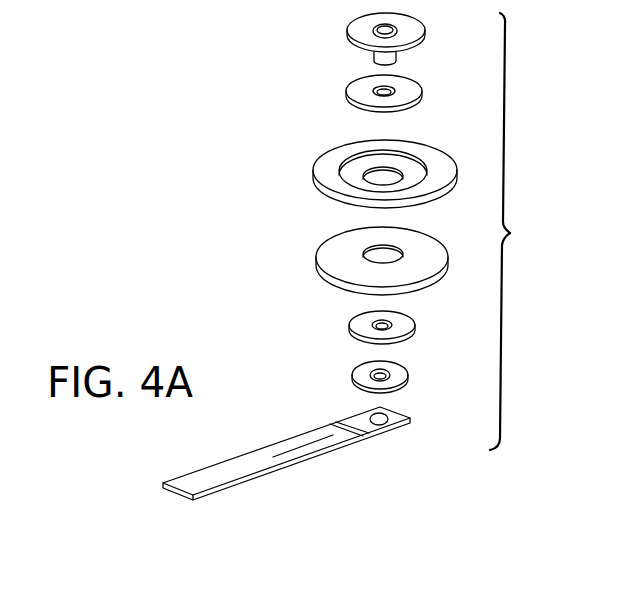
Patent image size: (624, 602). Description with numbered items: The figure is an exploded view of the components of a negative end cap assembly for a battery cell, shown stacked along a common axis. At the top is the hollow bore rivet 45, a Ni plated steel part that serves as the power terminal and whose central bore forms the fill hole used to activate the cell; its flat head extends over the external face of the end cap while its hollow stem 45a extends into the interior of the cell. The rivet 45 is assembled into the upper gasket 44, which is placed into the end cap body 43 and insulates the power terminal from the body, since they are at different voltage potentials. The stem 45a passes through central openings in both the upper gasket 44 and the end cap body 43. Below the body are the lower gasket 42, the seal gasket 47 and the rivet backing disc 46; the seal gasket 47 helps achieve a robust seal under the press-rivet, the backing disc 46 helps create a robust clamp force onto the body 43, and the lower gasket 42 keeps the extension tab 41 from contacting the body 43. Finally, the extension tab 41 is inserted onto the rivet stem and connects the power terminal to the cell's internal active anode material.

The extension tab 41 is at (338, 446).
The lower gasket 42 is at (316, 256).
The end cap body 43 is at (313, 170).
The upper gasket 44 is at (346, 91).
The hollow bore rivet 45 is at (347, 31).
The stem 45a is at (397, 58).
The rivet backing disc 46 is at (352, 373).
The seal gasket 47 is at (349, 323).